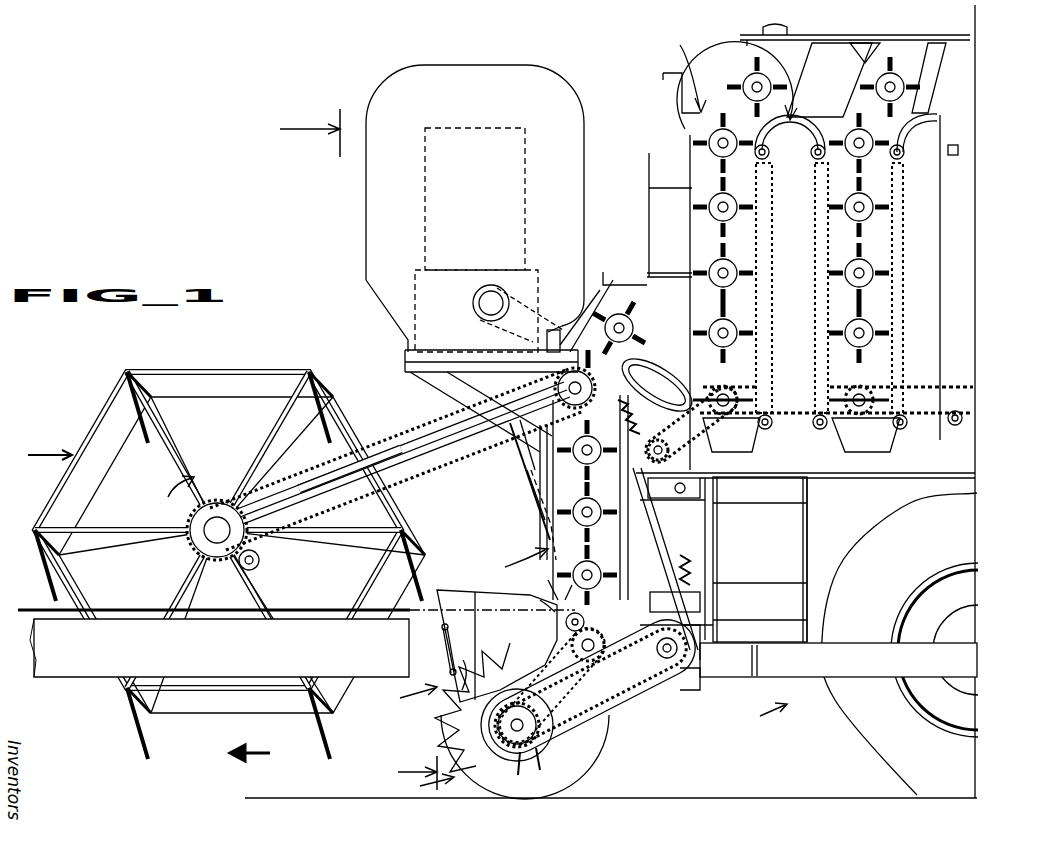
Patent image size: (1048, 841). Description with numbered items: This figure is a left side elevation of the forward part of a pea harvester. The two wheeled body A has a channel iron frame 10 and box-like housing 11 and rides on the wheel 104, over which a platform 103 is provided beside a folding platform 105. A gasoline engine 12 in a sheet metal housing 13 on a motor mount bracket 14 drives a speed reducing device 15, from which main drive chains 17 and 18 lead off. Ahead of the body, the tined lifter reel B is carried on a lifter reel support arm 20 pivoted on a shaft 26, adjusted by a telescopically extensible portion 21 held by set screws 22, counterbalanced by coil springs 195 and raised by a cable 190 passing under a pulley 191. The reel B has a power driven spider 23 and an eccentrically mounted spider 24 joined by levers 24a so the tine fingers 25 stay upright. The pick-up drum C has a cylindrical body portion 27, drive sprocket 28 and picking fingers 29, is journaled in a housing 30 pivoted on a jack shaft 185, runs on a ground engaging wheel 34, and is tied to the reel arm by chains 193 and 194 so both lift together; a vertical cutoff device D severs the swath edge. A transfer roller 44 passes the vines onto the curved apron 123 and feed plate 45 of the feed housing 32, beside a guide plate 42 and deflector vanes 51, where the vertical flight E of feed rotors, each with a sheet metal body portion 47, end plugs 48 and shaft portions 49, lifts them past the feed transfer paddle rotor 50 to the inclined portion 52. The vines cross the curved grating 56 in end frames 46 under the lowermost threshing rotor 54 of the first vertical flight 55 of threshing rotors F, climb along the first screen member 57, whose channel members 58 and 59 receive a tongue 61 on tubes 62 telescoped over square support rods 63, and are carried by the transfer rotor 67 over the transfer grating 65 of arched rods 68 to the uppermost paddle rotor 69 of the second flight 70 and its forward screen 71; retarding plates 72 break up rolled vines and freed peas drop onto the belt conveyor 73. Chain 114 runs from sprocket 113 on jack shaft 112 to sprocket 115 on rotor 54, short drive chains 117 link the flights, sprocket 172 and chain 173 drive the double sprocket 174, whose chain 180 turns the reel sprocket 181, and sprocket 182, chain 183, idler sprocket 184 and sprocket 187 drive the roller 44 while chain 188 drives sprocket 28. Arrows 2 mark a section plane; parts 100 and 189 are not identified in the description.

The channel iron frame 10 is at (790, 680).
The box-like housing 11 is at (962, 214).
The gasoline engine 12 is at (425, 222).
The sheet metal housing 13 is at (482, 111).
The motor mount bracket 14 is at (405, 358).
The speed reducing device 15 is at (415, 315).
The main drive chain 17 is at (548, 305).
The main drive chain 18 is at (482, 322).
The lifter reel support arm 20 is at (420, 440).
The telescopically extensible portion 21 is at (233, 500).
The set screws 22 is at (315, 475).
The power driven spider 23 is at (195, 372).
The eccentrically mounted spider 24 is at (243, 398).
The levers 24a is at (138, 372).
The tine fingers 25 is at (145, 440).
The shaft 26 is at (555, 388).
The cylindrical body portion 27 is at (522, 702).
The drive sprocket 28 is at (500, 690).
The picking fingers 29 is at (445, 724).
The housing 30 is at (660, 720).
The feed housing 32 is at (552, 580).
The ground engaging wheel 34 is at (600, 752).
The guide plate 42 is at (485, 620).
The transfer roller 44 is at (628, 690).
The feed plate 45 is at (676, 580).
The end frames 46 is at (860, 448).
The sheet metal body portion 47 is at (863, 222).
The forged metal end plug 48 is at (636, 328).
The supporting shaft portion 49 is at (850, 278).
The feed transfer paddle rotor 50 is at (624, 290).
The deflector vanes 51 is at (612, 550).
The inclined rearward portion 52 is at (698, 390).
The lowermost threshing rotor 54 is at (740, 388).
The first vertical flight 55 is at (680, 135).
The curved grating 56 is at (845, 452).
The first screen member 57 is at (748, 245).
The channel member 58 is at (760, 400).
The channel member 59 is at (795, 163).
The tongue 61 is at (763, 162).
The tubes 62 is at (768, 150).
The square support rods 63 is at (770, 155).
The transfer grating 65 is at (712, 100).
The paddle bladed transfer rotor 67 is at (782, 56).
The arched rods 68 is at (805, 125).
The uppermost paddle rotor 69 is at (888, 165).
The second threshing rotor flight 70 is at (874, 100).
The forward screen 71 is at (859, 222).
The retarding plates 72 is at (846, 72).
The belt conveyor 73 is at (812, 510).
The side frame 100 is at (649, 207).
The platform 103 is at (870, 470).
The wheel 104 is at (948, 764).
The folding platform 105 is at (873, 672).
The jack shaft 112 is at (720, 480).
The sprocket 113 is at (690, 540).
The chain 114 is at (657, 391).
The sprocket 115 is at (740, 480).
The short drive chains 117 is at (870, 385).
The forwardly curved apron 123 is at (672, 705).
The sprocket 172 is at (578, 356).
The chain 173 is at (440, 395).
The double sprocket 174 is at (530, 490).
The chain 180 is at (540, 495).
The sprocket 181 is at (239, 565).
The sprocket 182 is at (570, 640).
The chain 183 is at (700, 628).
The idler sprocket 184 is at (545, 600).
The jack shaft 185 is at (752, 658).
The sprocket 187 is at (530, 632).
The chain 188 is at (703, 692).
The strut end 189 is at (480, 690).
The cable 190 is at (340, 605).
The pulley 191 is at (700, 602).
The chain 193 is at (540, 520).
The chain 194 is at (530, 460).
The counterbalancing coil springs 195 is at (790, 538).
The section line 2- 2 is at (358, 446).
The body portion A is at (763, 714).
The lifter reel B is at (41, 455).
The vine pick-up device C is at (428, 785).
The vertical cutoff device D is at (408, 696).
The vertical flight of feed paddle rotors E is at (519, 562).
The first vertical flight of paddle bladed threshing rotors F is at (685, 71).